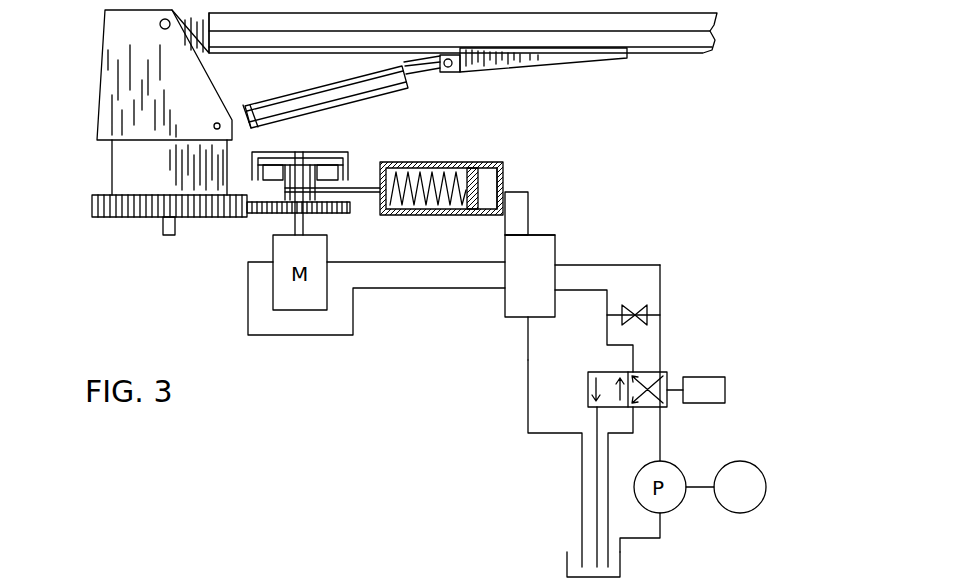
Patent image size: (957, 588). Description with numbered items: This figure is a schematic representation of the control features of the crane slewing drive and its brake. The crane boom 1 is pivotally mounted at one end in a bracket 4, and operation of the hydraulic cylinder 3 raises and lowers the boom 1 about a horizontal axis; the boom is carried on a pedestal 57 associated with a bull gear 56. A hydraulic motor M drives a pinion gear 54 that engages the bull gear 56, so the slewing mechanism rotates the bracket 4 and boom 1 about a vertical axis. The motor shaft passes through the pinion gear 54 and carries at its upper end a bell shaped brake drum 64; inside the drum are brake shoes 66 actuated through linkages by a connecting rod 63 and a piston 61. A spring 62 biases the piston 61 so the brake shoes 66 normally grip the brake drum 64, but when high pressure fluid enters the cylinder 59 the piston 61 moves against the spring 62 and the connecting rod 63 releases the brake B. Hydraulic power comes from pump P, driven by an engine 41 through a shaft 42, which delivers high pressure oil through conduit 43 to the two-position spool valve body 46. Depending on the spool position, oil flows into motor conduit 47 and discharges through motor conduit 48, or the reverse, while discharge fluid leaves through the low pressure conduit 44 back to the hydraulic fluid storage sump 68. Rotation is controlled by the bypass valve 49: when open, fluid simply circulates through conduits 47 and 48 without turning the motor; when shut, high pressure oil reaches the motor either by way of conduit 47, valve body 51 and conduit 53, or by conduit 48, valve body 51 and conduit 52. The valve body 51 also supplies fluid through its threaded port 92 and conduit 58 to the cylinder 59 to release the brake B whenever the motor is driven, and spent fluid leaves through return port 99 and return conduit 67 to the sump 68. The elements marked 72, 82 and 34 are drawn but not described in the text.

The boom 1 is at (633, 55).
The hydraulic cylinder 3 is at (315, 100).
The bracket 4 is at (123, 47).
The control element 34 is at (355, 581).
The engine 41 is at (763, 477).
The shaft 42 is at (688, 490).
The conduit 43 is at (662, 432).
The low pressure conduit 44 is at (633, 416).
The spool valve body 46 is at (670, 377).
The motor conduit 47 is at (662, 288).
The motor conduit 48 is at (612, 308).
The bypass valve 49 is at (661, 313).
The valve body 51 is at (557, 243).
The conduit 52 is at (400, 290).
The conduit 53 is at (428, 260).
The pinion gear 54 is at (272, 212).
The bull gear 56 is at (155, 215).
The pedestal 57 is at (137, 160).
The conduit 58 is at (530, 207).
The cylinder 59 is at (506, 170).
The piston 61 is at (480, 166).
The spring 62 is at (455, 172).
The connecting rod 63 is at (360, 196).
The brake drum 64 is at (348, 156).
The brake shoes 66 is at (273, 172).
The return conduit 67 is at (528, 397).
The hydraulic fluid storage sump 68 is at (621, 563).
The valve ports 72 is at (505, 293).
The valve passages 82 is at (557, 262).
The threaded port 92 is at (530, 232).
The return port 99 is at (528, 318).
The brake B is at (318, 151).